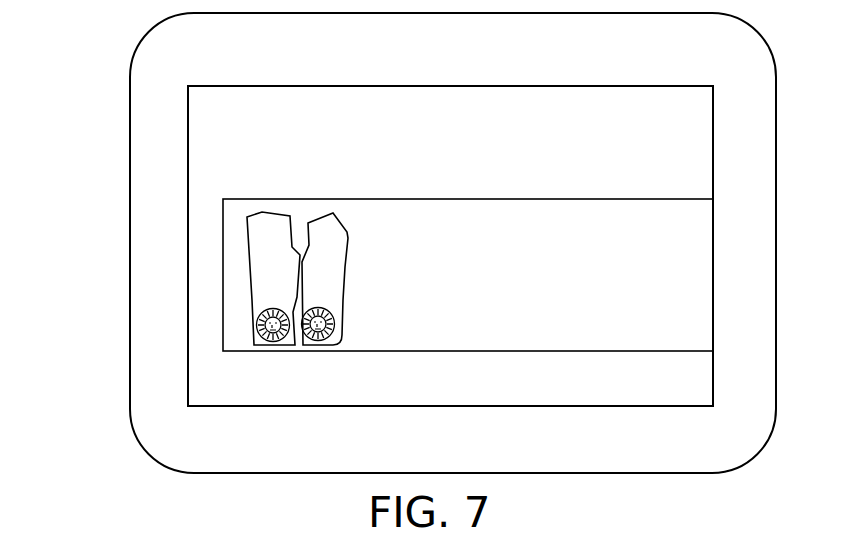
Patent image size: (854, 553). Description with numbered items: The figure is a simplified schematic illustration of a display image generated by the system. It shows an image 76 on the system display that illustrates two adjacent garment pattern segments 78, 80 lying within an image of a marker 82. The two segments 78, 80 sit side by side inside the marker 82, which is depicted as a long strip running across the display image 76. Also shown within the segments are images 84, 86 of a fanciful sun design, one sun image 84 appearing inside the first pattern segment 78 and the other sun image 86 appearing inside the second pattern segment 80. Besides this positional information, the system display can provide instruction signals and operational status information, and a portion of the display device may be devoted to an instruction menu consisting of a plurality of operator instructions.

The image 76 is at (112, 132).
The garment pattern segment 78 is at (272, 229).
The garment pattern segment 80 is at (326, 233).
The marker 82 is at (688, 310).
The image of a fanciful sun design 84 is at (274, 330).
The image of a fanciful sun design 86 is at (328, 317).